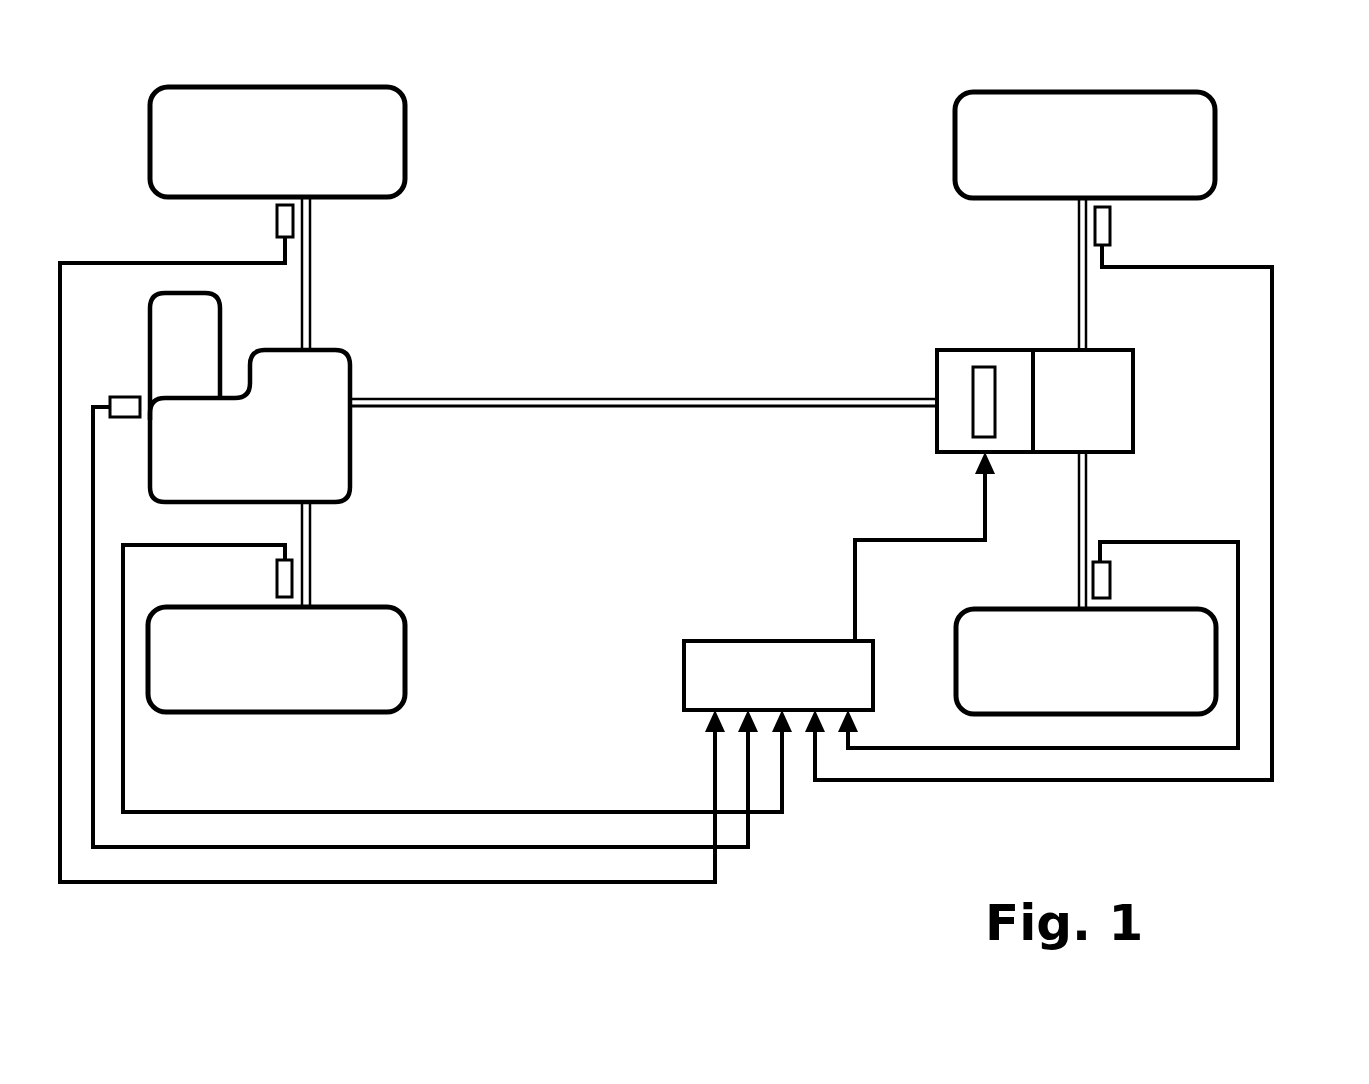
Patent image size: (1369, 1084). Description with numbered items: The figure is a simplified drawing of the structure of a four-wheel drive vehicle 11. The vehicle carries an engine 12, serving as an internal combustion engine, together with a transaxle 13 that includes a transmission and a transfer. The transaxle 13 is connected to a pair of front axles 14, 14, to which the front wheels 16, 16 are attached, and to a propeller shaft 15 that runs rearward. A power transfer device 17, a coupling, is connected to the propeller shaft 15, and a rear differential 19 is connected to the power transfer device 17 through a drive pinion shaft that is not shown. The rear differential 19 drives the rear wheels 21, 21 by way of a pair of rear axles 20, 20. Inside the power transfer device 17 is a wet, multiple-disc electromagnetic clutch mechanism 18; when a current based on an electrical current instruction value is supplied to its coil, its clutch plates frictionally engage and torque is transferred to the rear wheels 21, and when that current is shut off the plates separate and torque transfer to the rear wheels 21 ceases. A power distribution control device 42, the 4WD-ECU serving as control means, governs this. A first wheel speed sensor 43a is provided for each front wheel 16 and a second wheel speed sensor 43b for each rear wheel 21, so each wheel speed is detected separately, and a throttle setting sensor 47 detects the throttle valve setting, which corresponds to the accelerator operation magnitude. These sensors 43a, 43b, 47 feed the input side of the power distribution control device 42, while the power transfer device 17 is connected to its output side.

The four-wheel drive vehicle 11 is at (1354, 135).
The engine 12 is at (150, 327).
The transaxle 13 is at (352, 450).
The front axle 14 is at (312, 273).
The propeller shaft 15 is at (455, 397).
The front wheel 16 is at (150, 127).
The power transfer device 17 is at (1003, 347).
The electromagnetic clutch mechanism 18 is at (973, 375).
The rear differential 19 is at (1135, 390).
The rear axle 20 is at (1090, 307).
The rear wheel 21 is at (955, 125).
The power distribution control device 42 is at (876, 674).
The first wheel speed sensor 43a is at (277, 220).
The second wheel speed sensor 43b is at (1112, 222).
The throttle setting sensor 47 is at (122, 420).